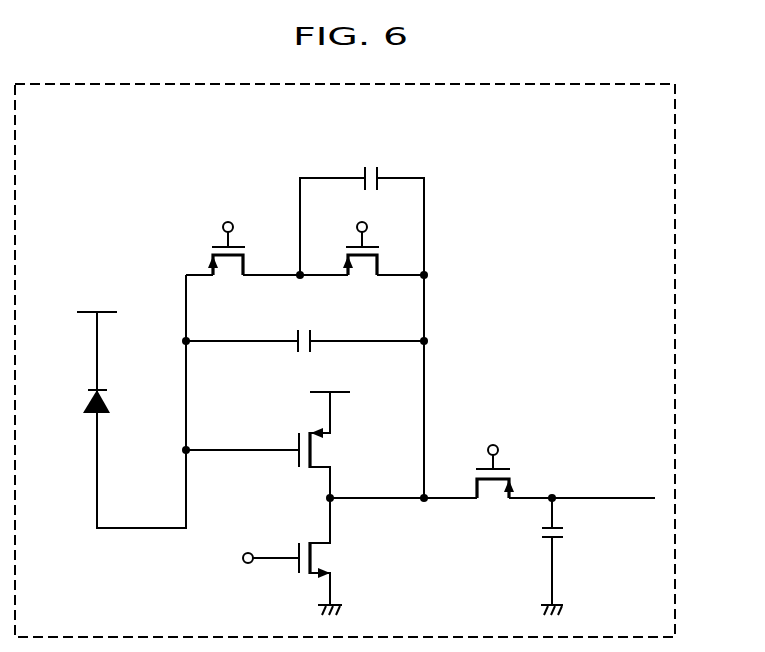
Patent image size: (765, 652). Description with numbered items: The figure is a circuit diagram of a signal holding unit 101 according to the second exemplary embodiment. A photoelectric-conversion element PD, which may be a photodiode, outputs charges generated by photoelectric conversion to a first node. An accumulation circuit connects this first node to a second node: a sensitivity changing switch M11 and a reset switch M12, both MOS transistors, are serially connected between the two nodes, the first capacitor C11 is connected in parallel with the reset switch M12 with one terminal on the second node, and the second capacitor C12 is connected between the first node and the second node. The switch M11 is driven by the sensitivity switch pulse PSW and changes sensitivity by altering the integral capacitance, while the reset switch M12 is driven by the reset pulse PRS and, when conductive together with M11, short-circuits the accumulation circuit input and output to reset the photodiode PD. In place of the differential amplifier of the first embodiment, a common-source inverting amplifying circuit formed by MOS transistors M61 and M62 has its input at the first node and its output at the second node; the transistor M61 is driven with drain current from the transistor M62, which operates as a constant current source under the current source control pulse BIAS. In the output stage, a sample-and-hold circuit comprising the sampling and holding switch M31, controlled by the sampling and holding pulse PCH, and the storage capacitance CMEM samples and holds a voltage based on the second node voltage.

The signal holding unit 101 is at (675, 291).
The photoelectric-conversion element PD is at (113, 365).
The sensitivity changing switch M11 is at (211, 248).
The reset switch M12 is at (379, 248).
The first capacitor C11 is at (368, 165).
The second capacitor C12 is at (314, 336).
The MOS transistor M61 is at (323, 450).
The MOS transistor M62 is at (323, 555).
The sampling and holding switch M31 is at (512, 478).
The storage capacitance CMEM is at (514, 556).
The sensitivity switch pulse PSW is at (228, 218).
The reset pulse PRS is at (360, 219).
The sampling and holding pulse PCH is at (495, 442).
The current source control pulse BIAS is at (260, 575).